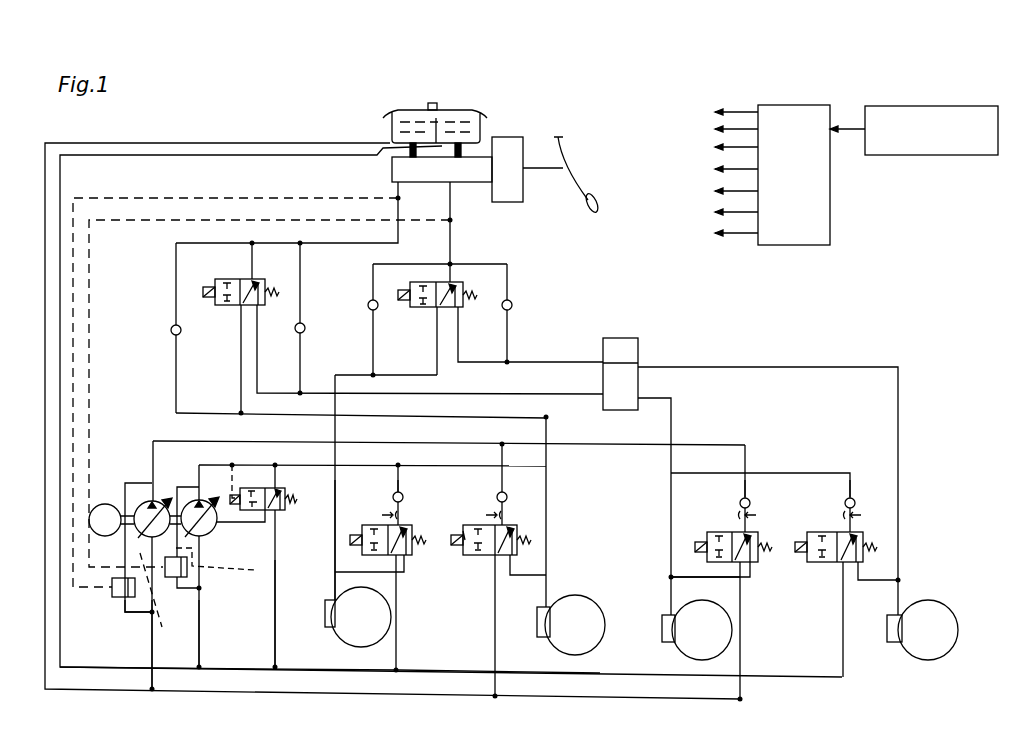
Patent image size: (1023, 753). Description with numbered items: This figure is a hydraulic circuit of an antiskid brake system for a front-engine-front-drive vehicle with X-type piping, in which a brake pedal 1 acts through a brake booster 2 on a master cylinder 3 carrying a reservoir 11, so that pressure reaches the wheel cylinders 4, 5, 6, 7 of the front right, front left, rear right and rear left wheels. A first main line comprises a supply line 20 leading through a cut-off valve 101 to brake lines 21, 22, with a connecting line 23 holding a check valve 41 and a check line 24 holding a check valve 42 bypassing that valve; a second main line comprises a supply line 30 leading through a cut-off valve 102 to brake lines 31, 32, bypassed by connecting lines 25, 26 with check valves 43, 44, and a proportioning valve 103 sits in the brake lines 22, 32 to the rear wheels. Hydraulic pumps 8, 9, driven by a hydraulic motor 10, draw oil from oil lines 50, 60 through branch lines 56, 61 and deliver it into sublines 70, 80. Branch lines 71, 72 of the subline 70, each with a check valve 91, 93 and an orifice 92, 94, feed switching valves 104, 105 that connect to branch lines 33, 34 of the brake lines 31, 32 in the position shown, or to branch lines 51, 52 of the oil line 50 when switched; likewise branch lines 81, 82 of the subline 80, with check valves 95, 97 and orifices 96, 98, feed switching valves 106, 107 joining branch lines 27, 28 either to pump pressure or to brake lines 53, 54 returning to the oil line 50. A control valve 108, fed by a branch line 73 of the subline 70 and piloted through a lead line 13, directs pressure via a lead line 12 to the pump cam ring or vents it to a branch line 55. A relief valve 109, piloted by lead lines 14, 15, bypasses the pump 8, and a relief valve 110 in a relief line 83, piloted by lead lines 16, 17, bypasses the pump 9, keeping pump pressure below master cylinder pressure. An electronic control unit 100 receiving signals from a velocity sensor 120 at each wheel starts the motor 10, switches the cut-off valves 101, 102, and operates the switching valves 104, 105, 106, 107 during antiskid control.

The brake pedal 1 is at (600, 204).
The brake booster 2 is at (514, 200).
The master cylinder 3 is at (484, 160).
The wheel cylinder 4 is at (340, 637).
The wheel cylinder 5 is at (605, 625).
The wheel cylinder 6 is at (675, 652).
The wheel cylinder 7 is at (900, 657).
The hydraulic pump 8 is at (202, 567).
The hydraulic pump 9 is at (155, 502).
The hydraulic motor 10 is at (103, 504).
The reservoir 11 is at (462, 126).
The lead line 12 is at (257, 525).
The lead line 13 is at (232, 478).
The lead line 14 is at (89, 427).
The lead line 15 is at (228, 566).
The lead line 16 is at (74, 378).
The lead line 17 is at (164, 600).
The supply line 20 is at (399, 236).
The brake line 21 is at (548, 528).
The brake line 22 is at (669, 488).
The connecting line 23 is at (176, 377).
The check line 24 is at (302, 276).
The connecting line 25 is at (373, 372).
The connecting line 26 is at (510, 330).
The branch line 27 is at (523, 578).
The branch line 28 is at (707, 578).
The supply line 30 is at (452, 247).
The brake line 31 is at (333, 551).
The brake line 32 is at (897, 418).
The branch line 33 is at (402, 580).
The branch line 34 is at (870, 583).
The check valve 41 is at (170, 330).
The check valve 42 is at (305, 327).
The check valve 43 is at (370, 311).
The check valve 44 is at (512, 302).
The oil line 50 is at (248, 157).
The branch line 51 is at (400, 659).
The branch line 52 is at (841, 633).
The brake line 53 is at (497, 659).
The brake line 54 is at (742, 660).
The branch line 55 is at (275, 597).
The branch line 56 is at (200, 637).
The oil line 60 is at (241, 143).
The branch line 61 is at (152, 657).
The subline 70 is at (447, 468).
The branch line 71 is at (401, 490).
The branch line 72 is at (851, 478).
The branch line 73 is at (153, 590).
The subline 80 is at (422, 443).
The branch line 81 is at (505, 490).
The branch line 82 is at (741, 490).
The relief line 83 is at (128, 613).
The check valve 91 is at (392, 496).
The orifice 92 is at (383, 516).
The check valve 93 is at (845, 505).
The orifice 94 is at (856, 522).
The check valve 95 is at (515, 515).
The orifice 96 is at (467, 522).
The check valve 97 is at (750, 507).
The orifice 98 is at (754, 521).
The electronic control unit 100 is at (797, 105).
The cut-off valve 101 is at (225, 307).
The cut-off valve 102 is at (422, 310).
The proportioning valve 103 is at (641, 353).
The switching valve 104 is at (414, 528).
The switching valve 105 is at (811, 565).
The switching valve 106 is at (477, 558).
The switching valve 107 is at (712, 528).
The control valve 108 is at (279, 507).
The relief valve 109 is at (187, 575).
The relief valve 110 is at (112, 597).
The velocity sensor 120 is at (940, 106).